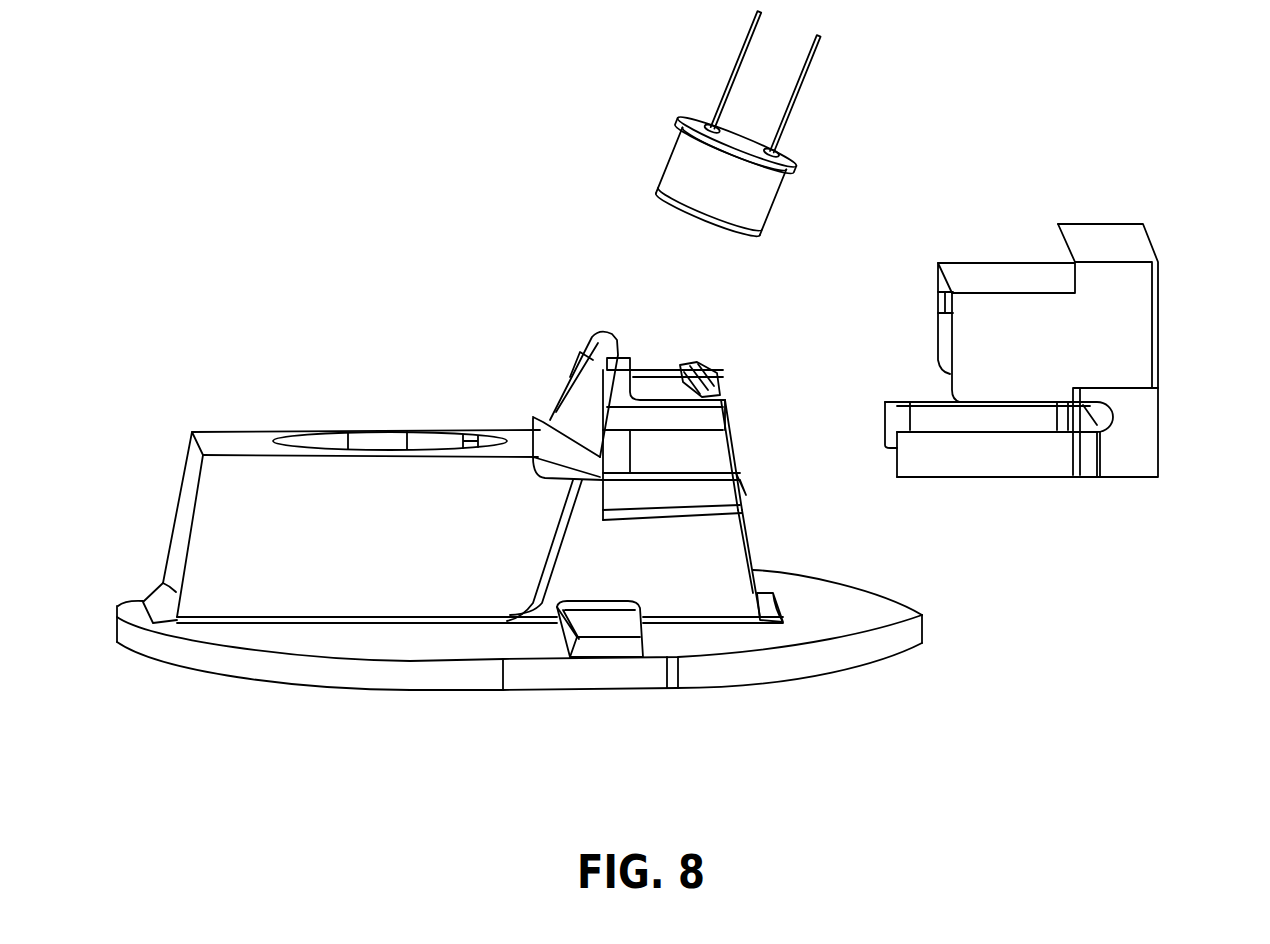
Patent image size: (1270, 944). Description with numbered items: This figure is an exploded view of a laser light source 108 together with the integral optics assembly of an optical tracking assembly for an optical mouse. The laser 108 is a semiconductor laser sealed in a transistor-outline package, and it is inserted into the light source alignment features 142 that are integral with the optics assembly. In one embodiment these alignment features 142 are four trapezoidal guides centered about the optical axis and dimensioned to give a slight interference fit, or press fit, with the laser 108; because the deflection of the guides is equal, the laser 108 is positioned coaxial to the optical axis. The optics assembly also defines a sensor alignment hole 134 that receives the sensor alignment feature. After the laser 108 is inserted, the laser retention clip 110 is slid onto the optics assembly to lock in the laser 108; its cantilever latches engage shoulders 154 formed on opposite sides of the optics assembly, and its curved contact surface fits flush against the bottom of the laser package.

The laser light source 108 is at (797, 163).
The laser retention clip 110 is at (1142, 330).
The sensor alignment hole 134 is at (367, 392).
The light source alignment features 142 is at (593, 335).
The shoulders 154 is at (717, 460).